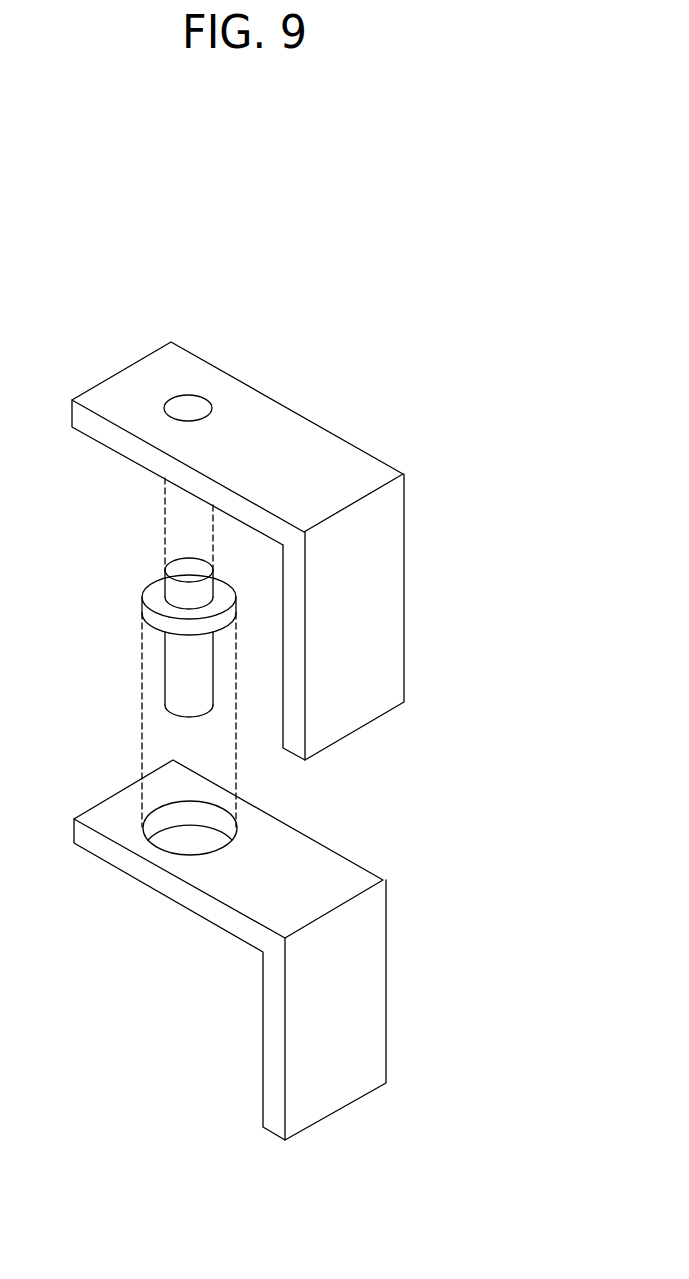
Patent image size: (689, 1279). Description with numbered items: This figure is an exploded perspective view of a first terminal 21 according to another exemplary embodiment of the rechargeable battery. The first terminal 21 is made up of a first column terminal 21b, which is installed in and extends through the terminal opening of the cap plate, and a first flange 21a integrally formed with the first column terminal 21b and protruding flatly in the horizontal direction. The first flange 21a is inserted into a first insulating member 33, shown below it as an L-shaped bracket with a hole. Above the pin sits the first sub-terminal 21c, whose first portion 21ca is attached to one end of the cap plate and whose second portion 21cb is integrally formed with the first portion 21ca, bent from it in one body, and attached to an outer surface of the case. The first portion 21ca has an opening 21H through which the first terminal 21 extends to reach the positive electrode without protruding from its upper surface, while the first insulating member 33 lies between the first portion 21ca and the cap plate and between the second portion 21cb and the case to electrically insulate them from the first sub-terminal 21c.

The first terminal 21 is at (134, 637).
The first flange 21a is at (163, 626).
The first column terminal 21b is at (187, 673).
The first sub-terminal 21c is at (316, 533).
The first portion 21ca is at (286, 425).
The second portion 21cb is at (391, 617).
The opening 21H is at (190, 407).
The first insulating member 33 is at (320, 862).